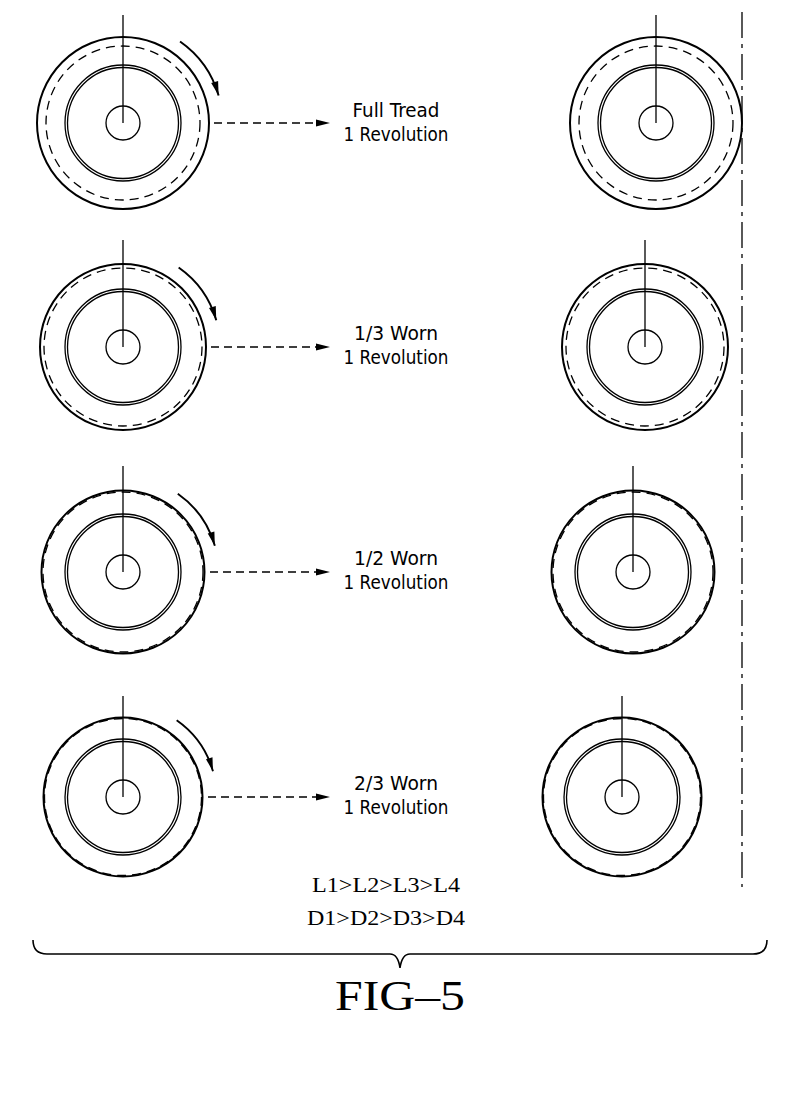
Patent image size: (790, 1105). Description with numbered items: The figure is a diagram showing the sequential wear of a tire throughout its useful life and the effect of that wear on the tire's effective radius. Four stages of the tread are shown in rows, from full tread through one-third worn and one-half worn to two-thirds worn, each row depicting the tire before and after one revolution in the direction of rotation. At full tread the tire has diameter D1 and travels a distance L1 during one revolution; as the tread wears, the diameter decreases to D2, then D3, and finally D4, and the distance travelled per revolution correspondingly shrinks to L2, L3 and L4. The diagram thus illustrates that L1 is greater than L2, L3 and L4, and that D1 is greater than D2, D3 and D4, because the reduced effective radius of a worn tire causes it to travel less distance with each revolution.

The distance travelled during one tire revolution at full tread L1 is at (137, 30).
The distance travelled during one tire revolution at one-third worn L2 is at (631, 256).
The distance travelled during one tire revolution at one-half worn L3 is at (137, 481).
The distance travelled during one tire revolution at two-thirds worn L4 is at (608, 711).
The tire diameter at full tread D1 is at (37, 145).
The tire diameter at one-third worn D2 is at (40, 368).
The tire diameter at one-half worn D3 is at (42, 592).
The tire diameter at two-thirds worn D4 is at (44, 818).